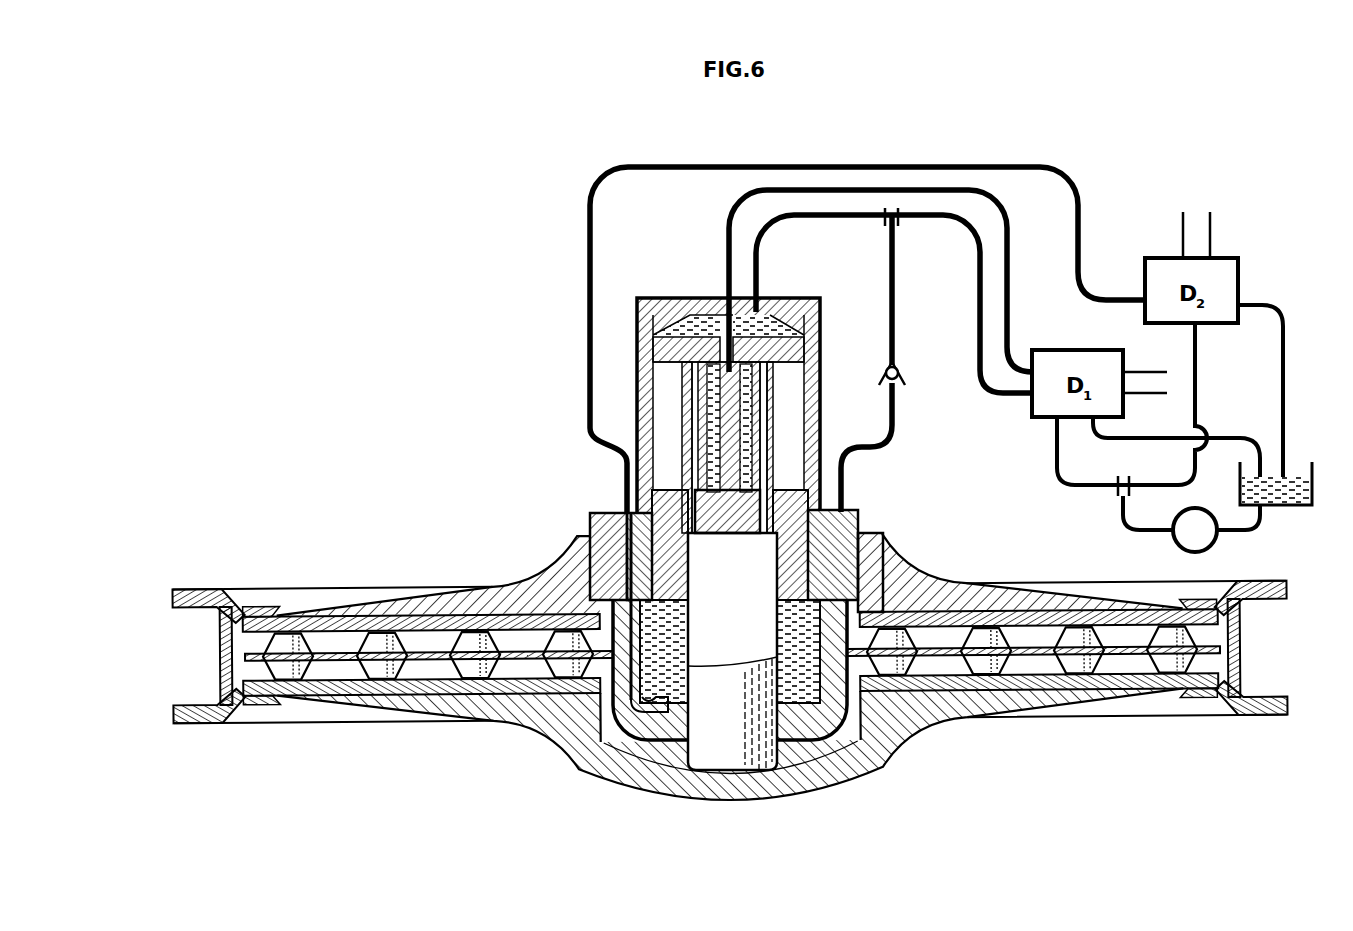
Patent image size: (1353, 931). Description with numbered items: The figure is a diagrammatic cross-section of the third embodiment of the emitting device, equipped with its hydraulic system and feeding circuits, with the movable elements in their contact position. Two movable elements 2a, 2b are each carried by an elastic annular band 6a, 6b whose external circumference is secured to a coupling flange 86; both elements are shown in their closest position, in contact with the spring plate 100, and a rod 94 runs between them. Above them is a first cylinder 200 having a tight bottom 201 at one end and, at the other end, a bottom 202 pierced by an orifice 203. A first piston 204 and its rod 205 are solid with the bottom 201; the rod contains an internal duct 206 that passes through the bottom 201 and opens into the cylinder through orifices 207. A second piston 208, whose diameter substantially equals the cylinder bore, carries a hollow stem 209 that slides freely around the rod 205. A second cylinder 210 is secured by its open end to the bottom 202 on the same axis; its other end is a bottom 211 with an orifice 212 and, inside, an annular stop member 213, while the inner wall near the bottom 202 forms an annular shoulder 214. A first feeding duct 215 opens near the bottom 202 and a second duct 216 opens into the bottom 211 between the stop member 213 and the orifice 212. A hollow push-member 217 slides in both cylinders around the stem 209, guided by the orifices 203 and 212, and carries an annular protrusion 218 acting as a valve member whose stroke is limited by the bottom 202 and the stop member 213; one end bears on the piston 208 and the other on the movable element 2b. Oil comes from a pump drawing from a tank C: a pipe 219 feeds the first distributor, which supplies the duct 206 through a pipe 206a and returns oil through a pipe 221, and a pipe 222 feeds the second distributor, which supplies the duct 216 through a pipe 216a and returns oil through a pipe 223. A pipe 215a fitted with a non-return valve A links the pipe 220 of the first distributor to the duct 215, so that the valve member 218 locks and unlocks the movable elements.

The pipe 216a is at (588, 252).
The pipe 206a is at (726, 251).
The tight bottom 201 is at (685, 298).
The pipe 220 is at (978, 316).
The pipe 215a is at (886, 252).
The second piston 208 is at (795, 350).
The first cylinder 200 is at (820, 372).
The push-member 217 is at (771, 414).
The internal duct 206 is at (700, 363).
The rod 205 is at (715, 383).
The hollow stem 209 is at (700, 415).
The orifices 207 is at (700, 476).
The orifice 203 is at (700, 488).
The first piston 204 is at (700, 498).
The bottom 202 is at (700, 508).
The feeding duct 216 is at (592, 519).
The second cylinder 210 is at (577, 536).
The feeding duct 215 is at (850, 512).
The annular protrusion 218 is at (858, 530).
The annular shoulder 214 is at (881, 545).
The pipe 219 is at (1056, 471).
The pipe 221 is at (1253, 405).
The pipe 222 is at (1197, 372).
The pipe 223 is at (1283, 348).
The non-return valve A is at (906, 373).
The oil tank C is at (1300, 507).
The annular band 6a is at (233, 598).
The movable element 2a is at (345, 619).
The coupling flange 86 is at (220, 651).
The annular band 6b is at (245, 703).
The movable element 2b is at (373, 694).
The center rod 94 is at (389, 660).
The spring plate 100 is at (437, 656).
The annular stop member 213 is at (645, 707).
The orifice 212 is at (688, 768).
The bottom 211 is at (886, 733).